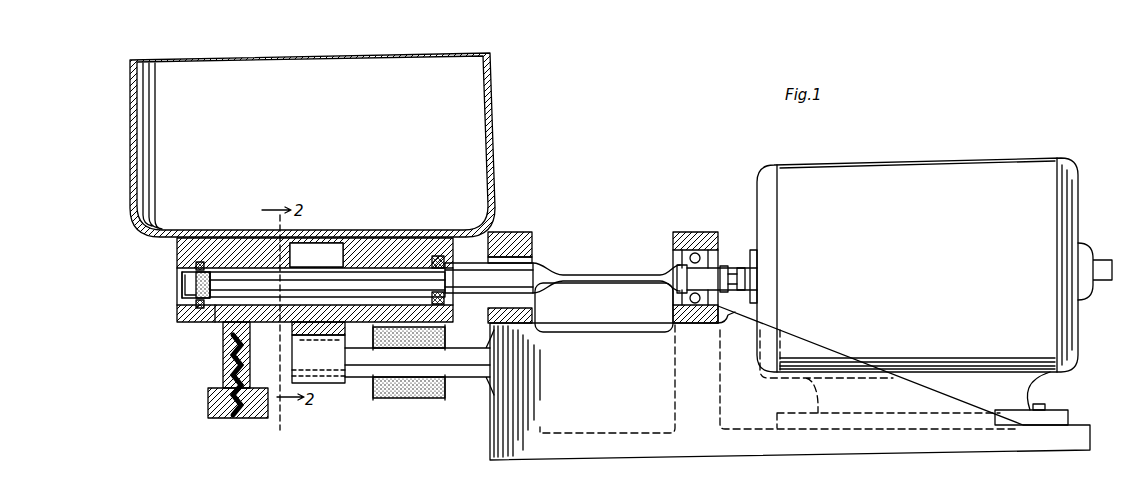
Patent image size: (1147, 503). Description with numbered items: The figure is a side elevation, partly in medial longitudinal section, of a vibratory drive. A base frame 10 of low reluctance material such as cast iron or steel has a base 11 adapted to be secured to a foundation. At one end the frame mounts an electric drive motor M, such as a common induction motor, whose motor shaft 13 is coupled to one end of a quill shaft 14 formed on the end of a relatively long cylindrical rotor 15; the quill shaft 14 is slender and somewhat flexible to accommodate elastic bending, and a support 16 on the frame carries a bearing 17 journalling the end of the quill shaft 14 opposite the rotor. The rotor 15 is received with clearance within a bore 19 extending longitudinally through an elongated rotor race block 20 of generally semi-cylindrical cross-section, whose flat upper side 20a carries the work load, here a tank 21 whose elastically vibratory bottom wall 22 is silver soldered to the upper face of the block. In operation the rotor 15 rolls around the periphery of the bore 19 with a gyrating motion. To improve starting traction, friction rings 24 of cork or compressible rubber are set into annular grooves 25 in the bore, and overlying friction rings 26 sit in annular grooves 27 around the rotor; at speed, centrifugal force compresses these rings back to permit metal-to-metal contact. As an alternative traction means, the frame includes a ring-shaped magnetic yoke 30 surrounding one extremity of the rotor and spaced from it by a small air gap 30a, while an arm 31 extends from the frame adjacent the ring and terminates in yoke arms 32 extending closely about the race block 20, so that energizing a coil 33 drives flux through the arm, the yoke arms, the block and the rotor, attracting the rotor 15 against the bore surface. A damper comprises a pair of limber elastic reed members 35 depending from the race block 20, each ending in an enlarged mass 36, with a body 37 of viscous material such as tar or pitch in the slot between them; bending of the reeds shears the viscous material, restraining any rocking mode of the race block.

The base frame 10 is at (632, 466).
The base 11 is at (878, 452).
The motor shaft 13 is at (747, 266).
The quill shaft 14 is at (607, 272).
The cylindrical rotor 15 is at (444, 335).
The support 16 is at (673, 312).
The bearing 17 is at (690, 232).
The bore 19 is at (220, 320).
The rotor race block 20 is at (177, 256).
The flat upper side 20a is at (438, 225).
The tank 21 is at (492, 124).
The bottom wall 22 is at (340, 237).
The friction rings 24 is at (193, 290).
The annular grooves 25 is at (196, 283).
The friction rings 26 is at (203, 268).
The annular grooves 27 is at (199, 270).
The magnetic yoke 30 is at (520, 233).
The air gap 30a is at (527, 300).
The arm 31 is at (466, 380).
The yoke arms 32 is at (337, 388).
The coil 33 is at (393, 397).
The reed members 35 is at (223, 365).
The enlarged mass 36 is at (215, 405).
The body of viscous material 37 is at (240, 418).
The electric drive motor M is at (1030, 170).